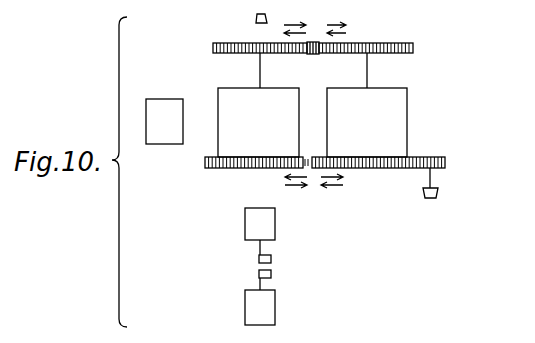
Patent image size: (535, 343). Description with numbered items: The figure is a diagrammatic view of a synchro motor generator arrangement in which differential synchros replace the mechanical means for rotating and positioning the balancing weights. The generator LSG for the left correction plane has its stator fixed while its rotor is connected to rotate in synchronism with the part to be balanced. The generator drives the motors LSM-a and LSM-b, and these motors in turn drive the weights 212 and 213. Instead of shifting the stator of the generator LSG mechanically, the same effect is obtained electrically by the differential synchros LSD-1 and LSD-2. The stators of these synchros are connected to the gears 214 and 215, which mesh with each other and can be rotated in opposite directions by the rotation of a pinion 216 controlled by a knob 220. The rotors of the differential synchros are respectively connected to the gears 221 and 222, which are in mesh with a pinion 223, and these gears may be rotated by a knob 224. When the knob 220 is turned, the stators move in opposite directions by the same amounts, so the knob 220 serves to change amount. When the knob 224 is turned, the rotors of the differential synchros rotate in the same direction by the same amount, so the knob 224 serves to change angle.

The weight 212 is at (272, 260).
The weight 213 is at (272, 274).
The gear 214 is at (227, 168).
The gear 215 is at (363, 168).
The pinion 216 is at (437, 168).
The knob 220 is at (439, 195).
The gear 221 is at (214, 50).
The gear 222 is at (405, 58).
The pinion 223 is at (308, 55).
The knob 224 is at (255, 19).
The generator LSG is at (162, 136).
The differential synchro LSD-1 is at (258, 122).
The differential synchro LSD-2 is at (367, 122).
The motor LSM-a is at (275, 223).
The motor LSM-b is at (275, 316).